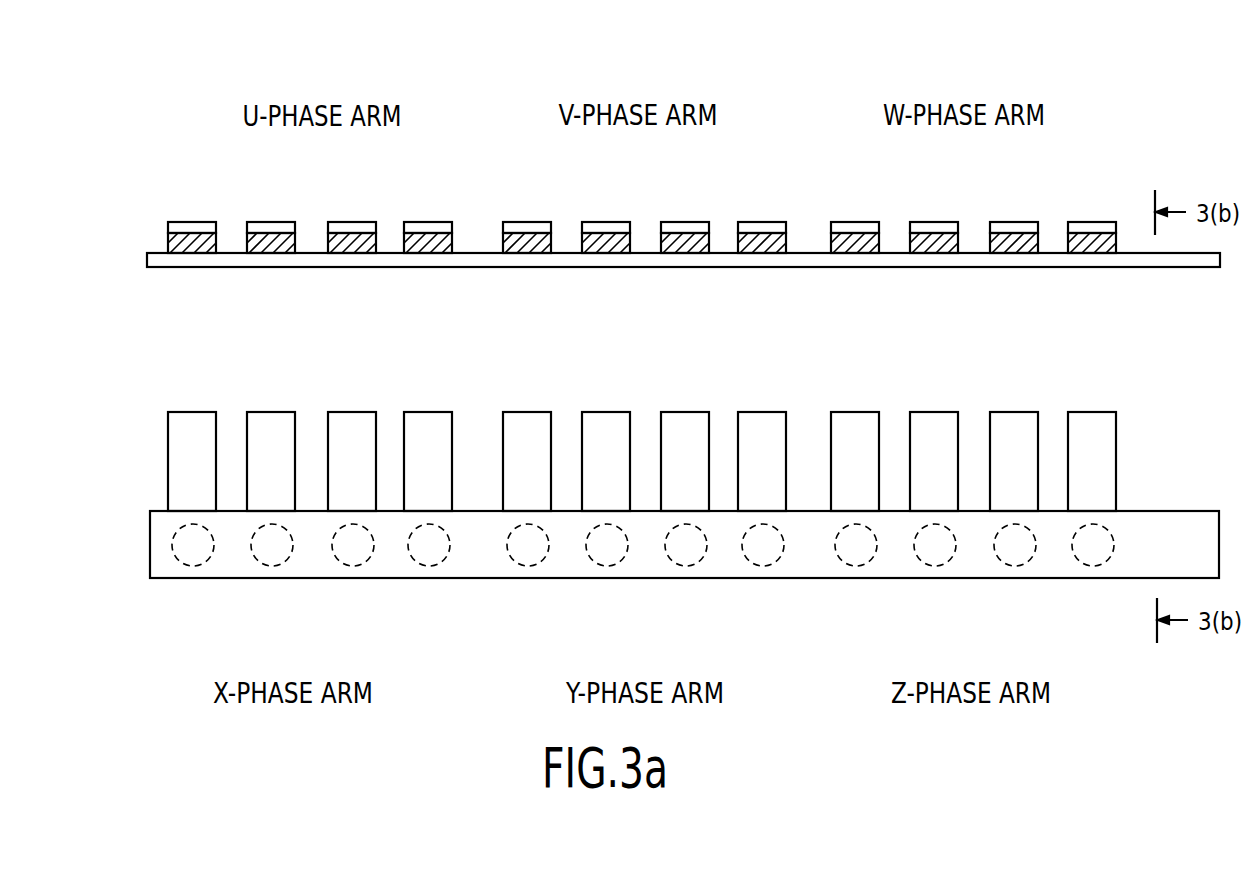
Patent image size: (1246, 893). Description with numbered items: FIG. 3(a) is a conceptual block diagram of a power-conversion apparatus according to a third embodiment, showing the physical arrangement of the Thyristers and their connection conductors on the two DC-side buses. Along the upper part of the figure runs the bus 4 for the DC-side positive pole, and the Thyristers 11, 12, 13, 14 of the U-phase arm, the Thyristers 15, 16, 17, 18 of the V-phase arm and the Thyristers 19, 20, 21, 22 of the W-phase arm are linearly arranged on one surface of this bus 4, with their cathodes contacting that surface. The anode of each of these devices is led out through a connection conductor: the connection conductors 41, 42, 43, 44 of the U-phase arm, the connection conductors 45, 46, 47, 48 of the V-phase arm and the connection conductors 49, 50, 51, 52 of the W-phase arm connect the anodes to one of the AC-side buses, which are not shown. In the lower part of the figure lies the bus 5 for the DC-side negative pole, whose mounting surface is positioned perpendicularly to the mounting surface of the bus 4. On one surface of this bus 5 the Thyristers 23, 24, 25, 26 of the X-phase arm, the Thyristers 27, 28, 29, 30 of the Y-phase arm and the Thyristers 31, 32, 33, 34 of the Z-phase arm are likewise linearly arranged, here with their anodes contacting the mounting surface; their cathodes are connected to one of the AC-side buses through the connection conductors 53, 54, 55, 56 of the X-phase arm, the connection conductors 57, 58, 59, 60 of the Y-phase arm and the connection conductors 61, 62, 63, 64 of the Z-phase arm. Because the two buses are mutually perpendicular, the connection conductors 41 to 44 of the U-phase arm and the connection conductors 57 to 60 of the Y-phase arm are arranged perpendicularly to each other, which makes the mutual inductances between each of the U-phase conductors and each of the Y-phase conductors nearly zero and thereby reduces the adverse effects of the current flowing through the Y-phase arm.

The bus for DC-side positive pole 4 is at (1177, 268).
The bus for DC-side negative pole 5 is at (1184, 511).
The Thyrister 11 is at (193, 253).
The Thyrister 12 is at (271, 270).
The Thyrister 13 is at (352, 270).
The Thyrister 14 is at (428, 270).
The Thyrister 15 is at (527, 270).
The Thyrister 16 is at (606, 270).
The Thyrister 17 is at (685, 270).
The Thyrister 18 is at (762, 270).
The Thyrister 19 is at (855, 270).
The Thyrister 20 is at (934, 270).
The Thyrister 21 is at (1014, 270).
The Thyrister 22 is at (1092, 270).
The Thyrister 23 is at (194, 548).
The Thyrister 24 is at (271, 579).
The Thyrister 25 is at (352, 579).
The Thyrister 26 is at (428, 579).
The Thyrister 27 is at (527, 579).
The Thyrister 28 is at (606, 579).
The Thyrister 29 is at (685, 579).
The Thyrister 30 is at (762, 579).
The Thyrister 31 is at (855, 579).
The Thyrister 32 is at (934, 579).
The Thyrister 33 is at (1014, 579).
The Thyrister 34 is at (1092, 579).
The connection conductor 41 is at (188, 222).
The connection conductor 42 is at (271, 208).
The connection conductor 43 is at (352, 208).
The connection conductor 44 is at (428, 208).
The connection conductor 45 is at (527, 208).
The connection conductor 46 is at (606, 208).
The connection conductor 47 is at (685, 208).
The connection conductor 48 is at (762, 208).
The connection conductor 49 is at (855, 208).
The connection conductor 50 is at (934, 208).
The connection conductor 51 is at (1014, 208).
The connection conductor 52 is at (1092, 208).
The connection conductor 53 is at (192, 412).
The connection conductor 54 is at (271, 437).
The connection conductor 55 is at (352, 437).
The connection conductor 56 is at (428, 437).
The connection conductor 57 is at (527, 437).
The connection conductor 58 is at (606, 437).
The connection conductor 59 is at (685, 437).
The connection conductor 60 is at (762, 437).
The connection conductor 61 is at (855, 437).
The connection conductor 62 is at (934, 437).
The connection conductor 63 is at (1014, 437).
The connection conductor 64 is at (1092, 437).